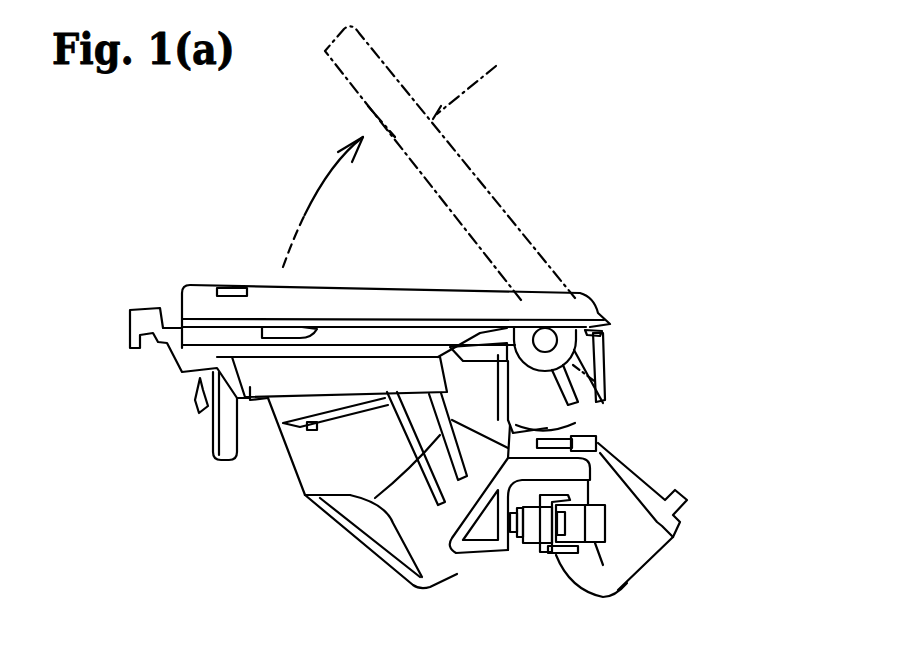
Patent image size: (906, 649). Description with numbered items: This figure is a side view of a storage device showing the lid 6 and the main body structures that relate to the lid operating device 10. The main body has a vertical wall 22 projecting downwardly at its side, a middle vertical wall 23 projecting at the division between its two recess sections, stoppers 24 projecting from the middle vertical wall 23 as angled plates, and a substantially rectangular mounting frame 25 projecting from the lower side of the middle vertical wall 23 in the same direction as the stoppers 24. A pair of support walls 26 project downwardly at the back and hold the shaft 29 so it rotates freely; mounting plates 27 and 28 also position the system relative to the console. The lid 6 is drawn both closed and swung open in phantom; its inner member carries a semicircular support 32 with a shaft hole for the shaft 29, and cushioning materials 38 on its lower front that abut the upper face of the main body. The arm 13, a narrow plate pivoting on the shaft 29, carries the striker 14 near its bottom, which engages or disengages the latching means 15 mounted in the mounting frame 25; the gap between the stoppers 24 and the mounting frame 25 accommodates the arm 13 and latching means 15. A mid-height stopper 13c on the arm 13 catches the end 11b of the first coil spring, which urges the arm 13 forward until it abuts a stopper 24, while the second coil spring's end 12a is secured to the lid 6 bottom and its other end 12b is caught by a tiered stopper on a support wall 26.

The lid 6 is at (209, 282).
The lid operating device 10 is at (652, 582).
The end of first coil spring 11b is at (600, 450).
The end of second coil spring 12a is at (605, 368).
The end of second coil spring 12b is at (598, 402).
The arm 13 is at (459, 556).
The stopper 13c is at (600, 447).
The striker 14 is at (512, 537).
The latching means 15 is at (595, 543).
The vertical wall 22 is at (249, 402).
The middle vertical wall 23 is at (300, 463).
The stopper 24 is at (440, 435).
The mounting frame 25 is at (545, 542).
The support wall 26 is at (598, 439).
The mounting plate 27 is at (217, 443).
The mounting plate 28 is at (458, 378).
The shaft 29 is at (547, 334).
The support 32 is at (523, 333).
The cushioning material 38 is at (302, 336).